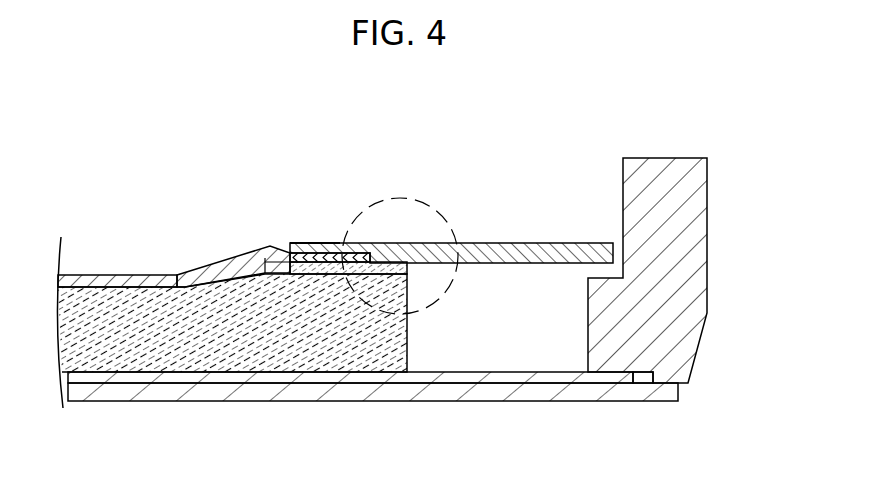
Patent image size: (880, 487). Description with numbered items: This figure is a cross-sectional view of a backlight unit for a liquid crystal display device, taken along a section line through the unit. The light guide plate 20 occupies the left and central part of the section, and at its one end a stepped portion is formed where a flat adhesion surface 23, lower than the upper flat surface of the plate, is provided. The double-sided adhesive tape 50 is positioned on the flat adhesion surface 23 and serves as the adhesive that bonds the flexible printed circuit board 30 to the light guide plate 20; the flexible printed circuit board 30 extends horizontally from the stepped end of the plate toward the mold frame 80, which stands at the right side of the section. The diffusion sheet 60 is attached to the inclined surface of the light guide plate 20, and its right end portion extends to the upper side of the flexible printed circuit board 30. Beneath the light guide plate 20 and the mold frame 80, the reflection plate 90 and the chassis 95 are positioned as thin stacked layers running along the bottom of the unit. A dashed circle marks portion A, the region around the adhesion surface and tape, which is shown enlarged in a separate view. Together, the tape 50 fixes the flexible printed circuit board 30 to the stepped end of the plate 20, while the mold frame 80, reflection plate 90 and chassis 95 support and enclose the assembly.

The light guide plate 20 is at (346, 347).
The flat adhesion surface 23 is at (256, 259).
The flexible printed circuit board 30 is at (562, 252).
The double-sided adhesive tape 50 is at (343, 257).
The diffusion sheet 60 is at (298, 242).
The mold frame 80 is at (697, 233).
The reflection plate 90 is at (607, 378).
The chassis 95 is at (528, 389).
The portion A is at (405, 201).